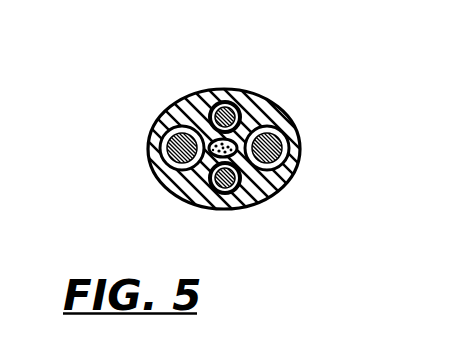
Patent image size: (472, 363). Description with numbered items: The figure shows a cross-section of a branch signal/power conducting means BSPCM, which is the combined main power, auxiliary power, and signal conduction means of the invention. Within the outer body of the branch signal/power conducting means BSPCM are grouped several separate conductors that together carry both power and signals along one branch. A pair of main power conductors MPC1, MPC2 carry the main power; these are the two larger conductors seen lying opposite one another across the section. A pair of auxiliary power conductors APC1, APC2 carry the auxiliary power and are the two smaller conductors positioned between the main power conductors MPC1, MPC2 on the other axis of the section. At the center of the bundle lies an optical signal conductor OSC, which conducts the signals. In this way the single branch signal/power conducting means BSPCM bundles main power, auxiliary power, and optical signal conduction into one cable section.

The auxiliary power conductor APC1 is at (226, 103).
The auxiliary power conductor APC2 is at (221, 192).
The main power conductor MPC1 is at (284, 132).
The main power conductor MPC2 is at (164, 167).
The optical signal conductor OSC is at (237, 140).
The branch signal/power conducting means BSPCM is at (247, 207).